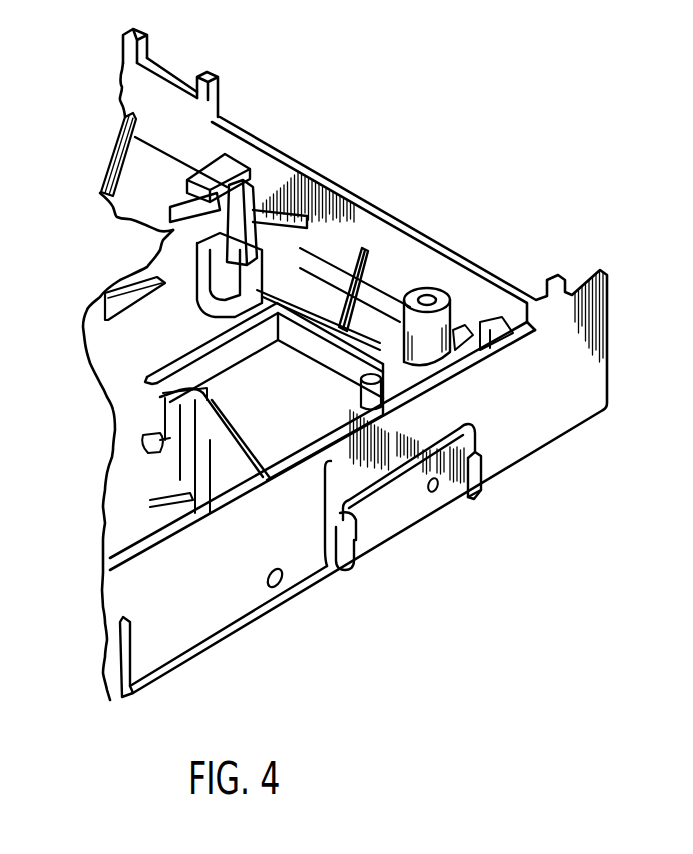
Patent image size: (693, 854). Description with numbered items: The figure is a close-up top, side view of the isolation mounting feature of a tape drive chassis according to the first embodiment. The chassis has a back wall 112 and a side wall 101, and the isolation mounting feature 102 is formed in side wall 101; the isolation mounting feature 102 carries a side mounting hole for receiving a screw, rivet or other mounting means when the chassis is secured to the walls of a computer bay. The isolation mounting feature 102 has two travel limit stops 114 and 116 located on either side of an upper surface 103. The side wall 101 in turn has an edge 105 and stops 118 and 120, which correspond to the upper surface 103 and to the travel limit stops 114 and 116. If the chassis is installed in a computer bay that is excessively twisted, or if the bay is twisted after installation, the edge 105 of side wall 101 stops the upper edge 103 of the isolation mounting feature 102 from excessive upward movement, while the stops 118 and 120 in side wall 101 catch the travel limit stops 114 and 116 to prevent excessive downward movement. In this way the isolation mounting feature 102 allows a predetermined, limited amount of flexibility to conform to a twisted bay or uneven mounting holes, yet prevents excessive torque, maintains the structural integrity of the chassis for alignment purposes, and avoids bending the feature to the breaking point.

The side wall 101 is at (587, 357).
The isolation mounting feature 102 is at (434, 527).
The upper surface 103 is at (420, 467).
The edge 105 is at (440, 440).
The back wall 112 is at (371, 198).
The travel limit stop 114 is at (330, 527).
The travel limit stop 116 is at (476, 458).
The stop 118 is at (337, 562).
The stop 120 is at (477, 478).